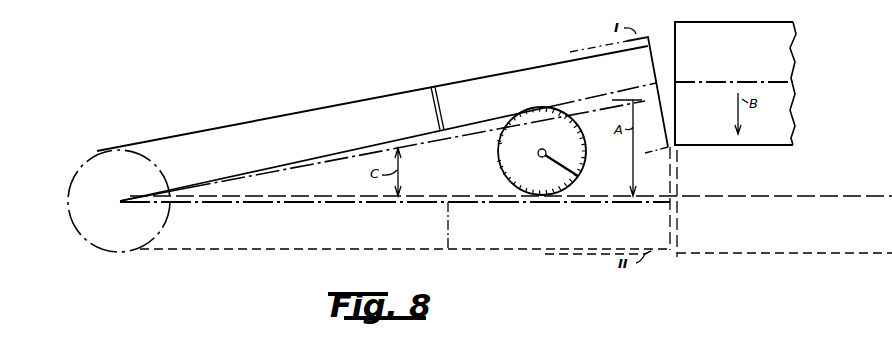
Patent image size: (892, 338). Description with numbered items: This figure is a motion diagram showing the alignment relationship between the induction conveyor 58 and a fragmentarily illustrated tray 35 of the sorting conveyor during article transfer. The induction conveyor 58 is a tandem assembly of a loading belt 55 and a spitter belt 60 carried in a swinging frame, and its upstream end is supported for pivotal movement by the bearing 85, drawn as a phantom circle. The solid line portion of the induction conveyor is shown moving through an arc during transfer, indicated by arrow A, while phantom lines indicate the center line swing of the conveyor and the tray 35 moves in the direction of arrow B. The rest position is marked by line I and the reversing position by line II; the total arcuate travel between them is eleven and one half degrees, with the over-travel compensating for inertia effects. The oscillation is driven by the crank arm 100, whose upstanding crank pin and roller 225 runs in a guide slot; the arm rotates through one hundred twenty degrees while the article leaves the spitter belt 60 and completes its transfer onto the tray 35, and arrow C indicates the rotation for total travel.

The tray 35 is at (748, 65).
The loading belt 55 is at (285, 149).
The induction conveyor 58 is at (352, 102).
The spitter belt 60 is at (503, 103).
The bearing 85 is at (78, 230).
The crank arm 100 is at (554, 170).
The crank pin and roller 225 is at (581, 178).